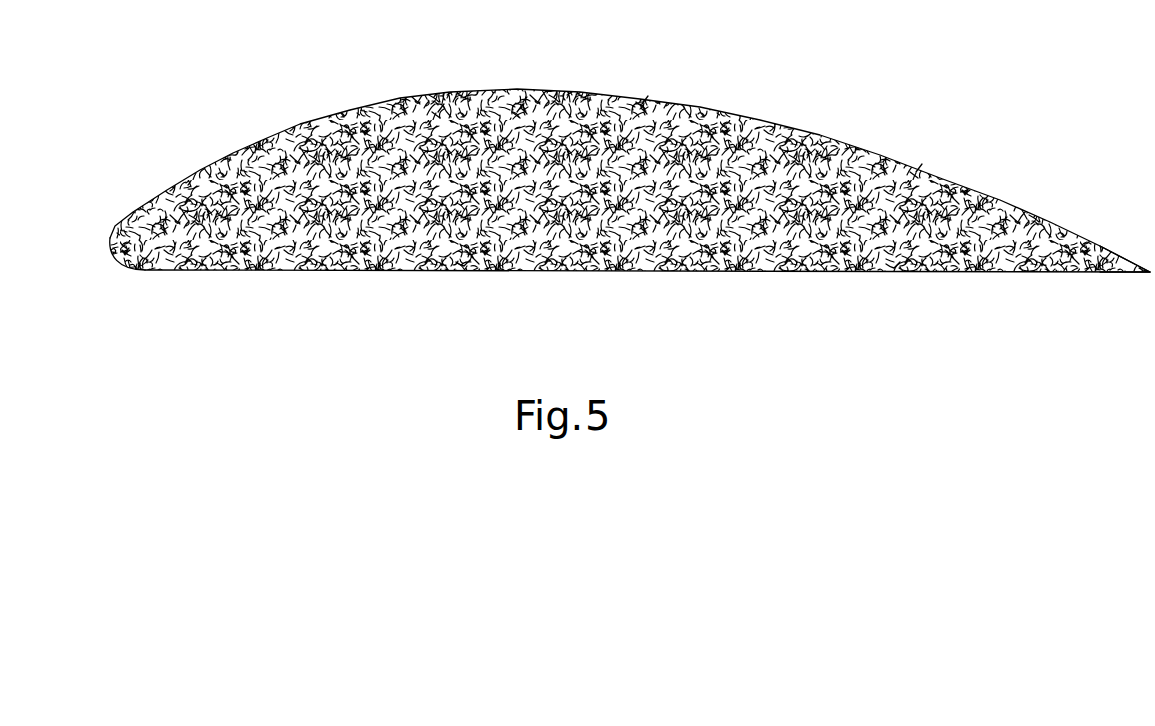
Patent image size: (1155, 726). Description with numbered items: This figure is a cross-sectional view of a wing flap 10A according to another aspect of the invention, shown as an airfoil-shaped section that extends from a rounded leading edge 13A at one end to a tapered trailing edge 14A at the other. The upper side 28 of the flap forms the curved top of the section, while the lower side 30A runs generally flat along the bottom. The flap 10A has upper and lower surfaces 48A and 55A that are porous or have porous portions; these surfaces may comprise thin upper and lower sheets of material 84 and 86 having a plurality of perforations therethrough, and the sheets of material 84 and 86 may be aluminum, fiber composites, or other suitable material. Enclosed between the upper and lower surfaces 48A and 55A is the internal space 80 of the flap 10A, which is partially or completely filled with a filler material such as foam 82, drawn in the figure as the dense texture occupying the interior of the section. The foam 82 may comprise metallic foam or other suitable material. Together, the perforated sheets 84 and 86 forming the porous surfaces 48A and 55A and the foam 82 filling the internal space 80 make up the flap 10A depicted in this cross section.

The flap 10A is at (845, 133).
The leading edge 13A is at (113, 215).
The trailing edge 14A is at (1151, 275).
The upper side 28 is at (740, 112).
The pressure side 30A is at (723, 271).
The upper surface 48A is at (642, 98).
The lower surface 55A is at (463, 270).
The internal space 80 is at (517, 108).
The foam 82 is at (438, 108).
The upper sheet of material 84 is at (917, 168).
The lower sheet of material 86 is at (893, 272).